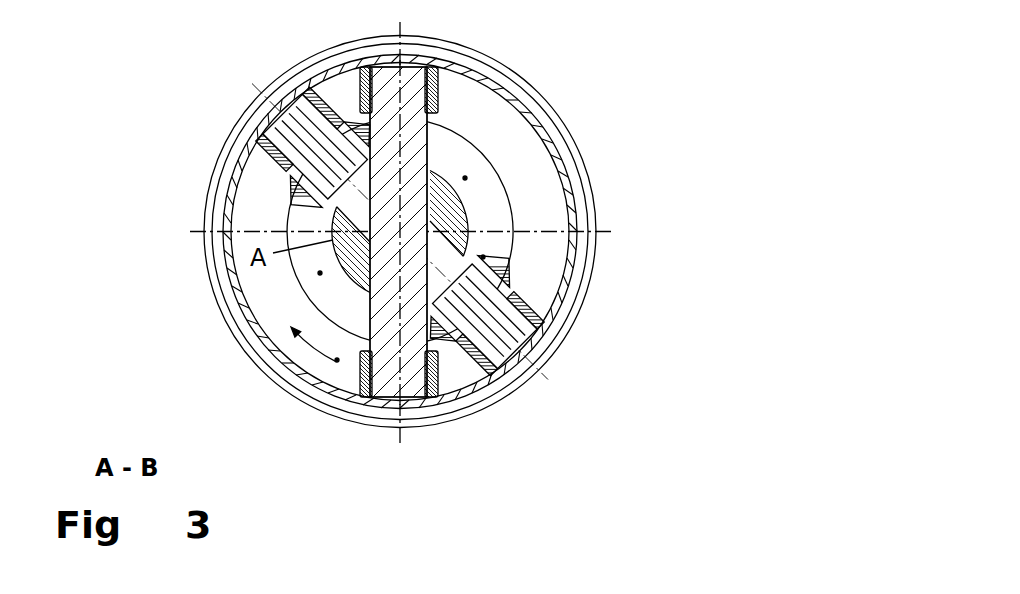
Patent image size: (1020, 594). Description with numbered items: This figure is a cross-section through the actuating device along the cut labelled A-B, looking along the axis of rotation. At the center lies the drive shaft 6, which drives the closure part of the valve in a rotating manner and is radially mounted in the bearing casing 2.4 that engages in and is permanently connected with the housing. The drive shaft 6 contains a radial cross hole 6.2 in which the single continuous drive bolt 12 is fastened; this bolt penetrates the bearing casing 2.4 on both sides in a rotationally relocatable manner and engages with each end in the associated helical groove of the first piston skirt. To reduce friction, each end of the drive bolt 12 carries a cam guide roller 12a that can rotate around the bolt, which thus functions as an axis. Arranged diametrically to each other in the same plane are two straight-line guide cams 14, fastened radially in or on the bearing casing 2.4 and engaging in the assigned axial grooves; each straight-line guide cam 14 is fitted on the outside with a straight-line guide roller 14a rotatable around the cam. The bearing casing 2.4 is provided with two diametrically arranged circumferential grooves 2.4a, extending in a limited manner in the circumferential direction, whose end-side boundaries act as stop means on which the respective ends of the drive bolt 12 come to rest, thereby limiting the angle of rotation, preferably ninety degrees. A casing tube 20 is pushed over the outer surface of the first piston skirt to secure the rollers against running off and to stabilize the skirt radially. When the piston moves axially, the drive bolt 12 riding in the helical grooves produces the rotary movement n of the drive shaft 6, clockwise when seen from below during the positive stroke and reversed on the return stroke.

The drive bolt 12 is at (390, 107).
The cam guide roller 12a is at (362, 78).
The straight-line guide cam 14 is at (310, 128).
The straight-line guide roller 14a is at (287, 160).
The bearing casing 2.4 is at (325, 197).
The circumferential groove 2.4a is at (427, 317).
The casing tube 20 is at (577, 213).
The drive shaft 6 is at (510, 272).
The radial cross hole 6.2 is at (430, 297).
The rotary movement n is at (337, 360).